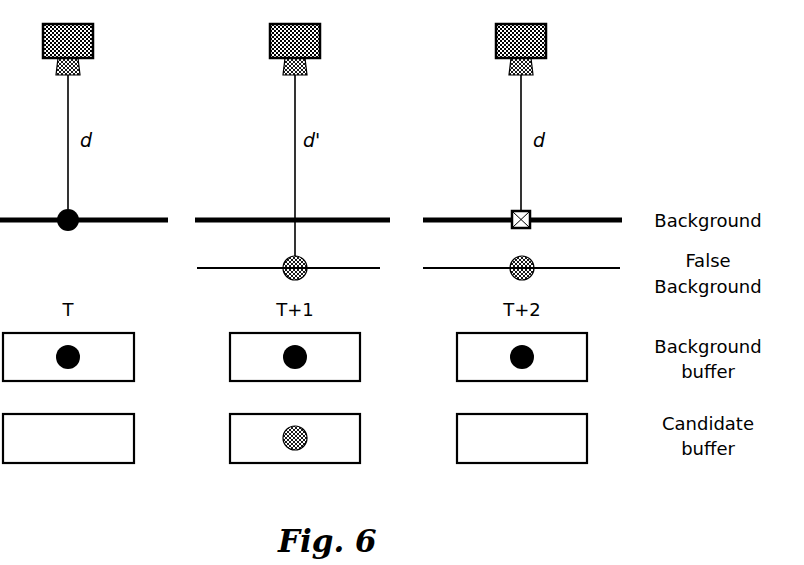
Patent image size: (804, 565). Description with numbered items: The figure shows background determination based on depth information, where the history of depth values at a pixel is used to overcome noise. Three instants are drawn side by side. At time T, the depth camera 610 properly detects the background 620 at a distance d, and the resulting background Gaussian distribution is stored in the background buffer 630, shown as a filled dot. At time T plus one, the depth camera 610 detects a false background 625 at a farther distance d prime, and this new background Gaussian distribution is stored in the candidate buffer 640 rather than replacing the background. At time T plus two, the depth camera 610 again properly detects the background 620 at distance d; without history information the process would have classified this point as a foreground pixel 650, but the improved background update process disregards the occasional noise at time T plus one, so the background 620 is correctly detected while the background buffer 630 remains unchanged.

The depth camera 610 is at (93, 42).
The background 620 is at (112, 218).
The false background 625 is at (338, 266).
The background buffer 630 is at (108, 333).
The candidate buffer 640 is at (108, 414).
The foreground pixel 650 is at (527, 211).